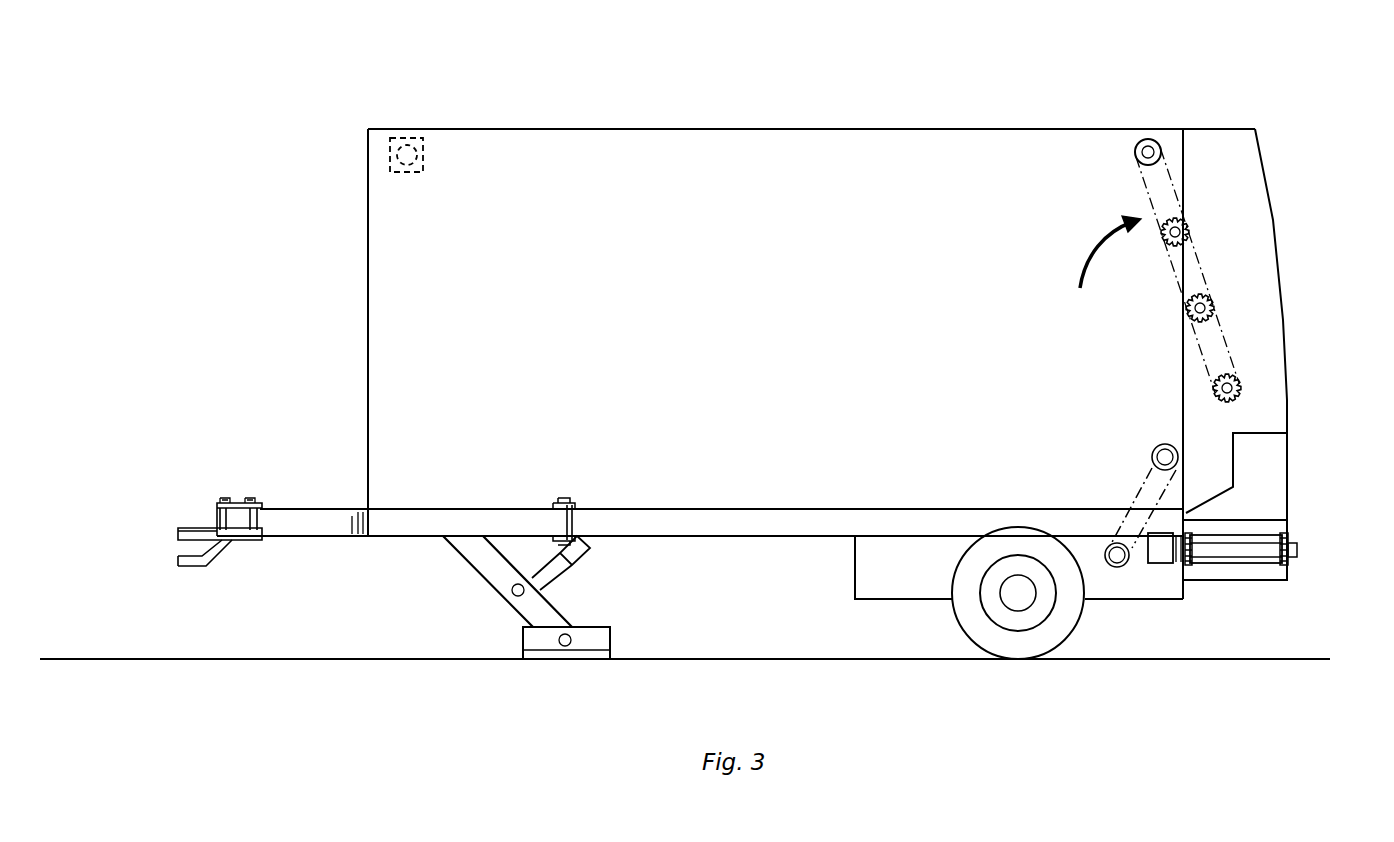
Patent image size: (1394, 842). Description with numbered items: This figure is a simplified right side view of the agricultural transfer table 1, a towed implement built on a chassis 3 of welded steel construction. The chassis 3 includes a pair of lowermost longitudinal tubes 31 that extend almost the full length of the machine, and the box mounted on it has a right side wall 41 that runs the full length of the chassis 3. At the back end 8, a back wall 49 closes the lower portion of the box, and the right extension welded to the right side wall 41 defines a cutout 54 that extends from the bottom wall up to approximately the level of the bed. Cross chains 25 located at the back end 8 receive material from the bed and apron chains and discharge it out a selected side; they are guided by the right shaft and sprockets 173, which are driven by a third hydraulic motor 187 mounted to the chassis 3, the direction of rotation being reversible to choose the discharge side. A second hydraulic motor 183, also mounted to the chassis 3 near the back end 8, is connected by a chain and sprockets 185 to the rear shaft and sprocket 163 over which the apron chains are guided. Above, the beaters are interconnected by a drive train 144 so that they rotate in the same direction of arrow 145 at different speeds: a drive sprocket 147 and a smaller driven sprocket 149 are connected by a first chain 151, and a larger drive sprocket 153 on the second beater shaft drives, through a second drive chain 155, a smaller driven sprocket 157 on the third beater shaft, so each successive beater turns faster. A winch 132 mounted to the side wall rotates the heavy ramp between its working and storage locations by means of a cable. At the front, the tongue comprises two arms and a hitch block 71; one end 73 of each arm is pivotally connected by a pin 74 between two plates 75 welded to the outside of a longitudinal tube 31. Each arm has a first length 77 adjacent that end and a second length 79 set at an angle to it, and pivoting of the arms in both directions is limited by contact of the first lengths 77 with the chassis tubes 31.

The agricultural transfer table 1 is at (680, 539).
The chassis 3 is at (828, 546).
The back end 8 is at (1290, 520).
The cross chains 25 is at (1229, 555).
The lowermost longitudinal tubes 31 is at (765, 522).
The right side wall 41 is at (802, 364).
The back wall 49 is at (1290, 463).
The cutout 54 is at (1228, 497).
The hitch block 71 is at (263, 507).
The end of arm 73 is at (563, 539).
The pin 74 is at (560, 502).
The plates 75 is at (575, 508).
The first length 77 is at (420, 524).
The second length 79 is at (295, 525).
The winch 132 is at (425, 158).
The drive train 144 is at (1228, 270).
The arrow 145 is at (1094, 250).
The drive sprocket 147 is at (1157, 203).
The driven sprocket 149 is at (1215, 305).
The first chain 151 is at (1172, 280).
The drive sprocket 153 is at (1232, 294).
The second drive chain 155 is at (1240, 355).
The driven sprocket 157 is at (1243, 393).
The rear shaft and sprocket 163 is at (1160, 443).
The right shaft and sprockets 173 is at (1300, 551).
The second hydraulic motor 183 is at (1113, 567).
The chain and sprockets 185 is at (1140, 478).
The third hydraulic motor 187 is at (1160, 550).